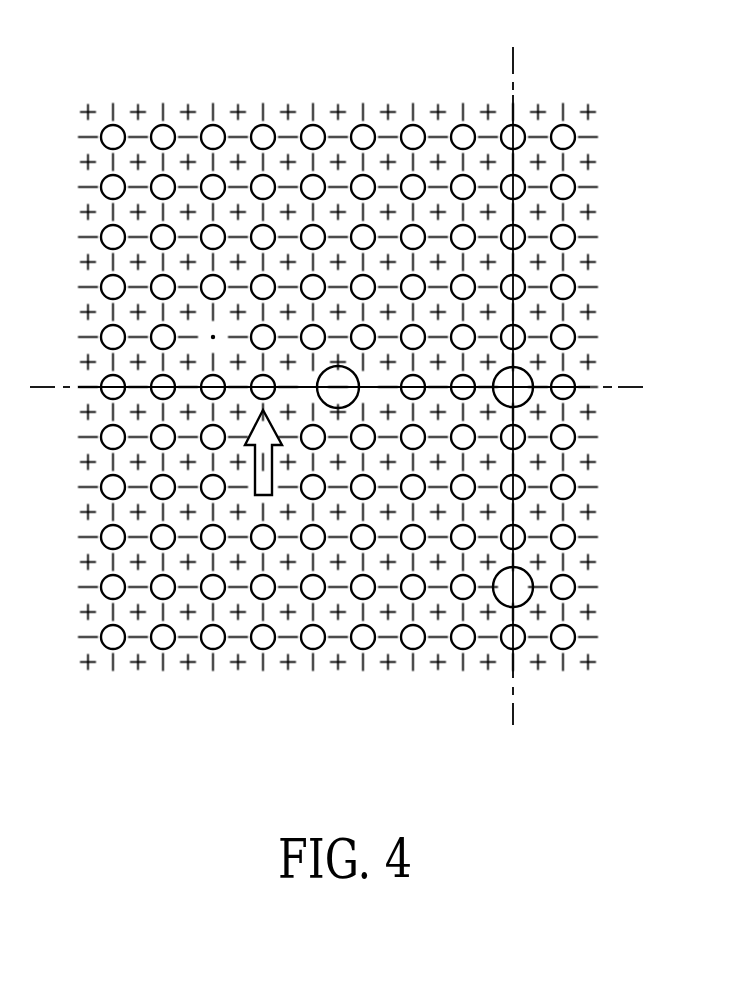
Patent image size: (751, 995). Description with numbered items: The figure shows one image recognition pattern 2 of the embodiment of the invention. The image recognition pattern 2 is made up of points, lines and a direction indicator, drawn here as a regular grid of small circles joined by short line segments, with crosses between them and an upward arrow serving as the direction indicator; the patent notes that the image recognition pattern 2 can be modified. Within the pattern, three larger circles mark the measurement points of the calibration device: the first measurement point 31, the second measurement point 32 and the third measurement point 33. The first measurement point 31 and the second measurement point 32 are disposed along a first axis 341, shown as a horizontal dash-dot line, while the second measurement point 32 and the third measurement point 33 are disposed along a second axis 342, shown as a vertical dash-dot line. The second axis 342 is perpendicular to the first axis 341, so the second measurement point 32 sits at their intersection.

The image recognition pattern 2 is at (29, 43).
The first measurement point 31 is at (338, 395).
The second measurement point 32 is at (522, 393).
The third measurement point 33 is at (532, 588).
The first axis 341 is at (635, 387).
The second axis 342 is at (513, 62).